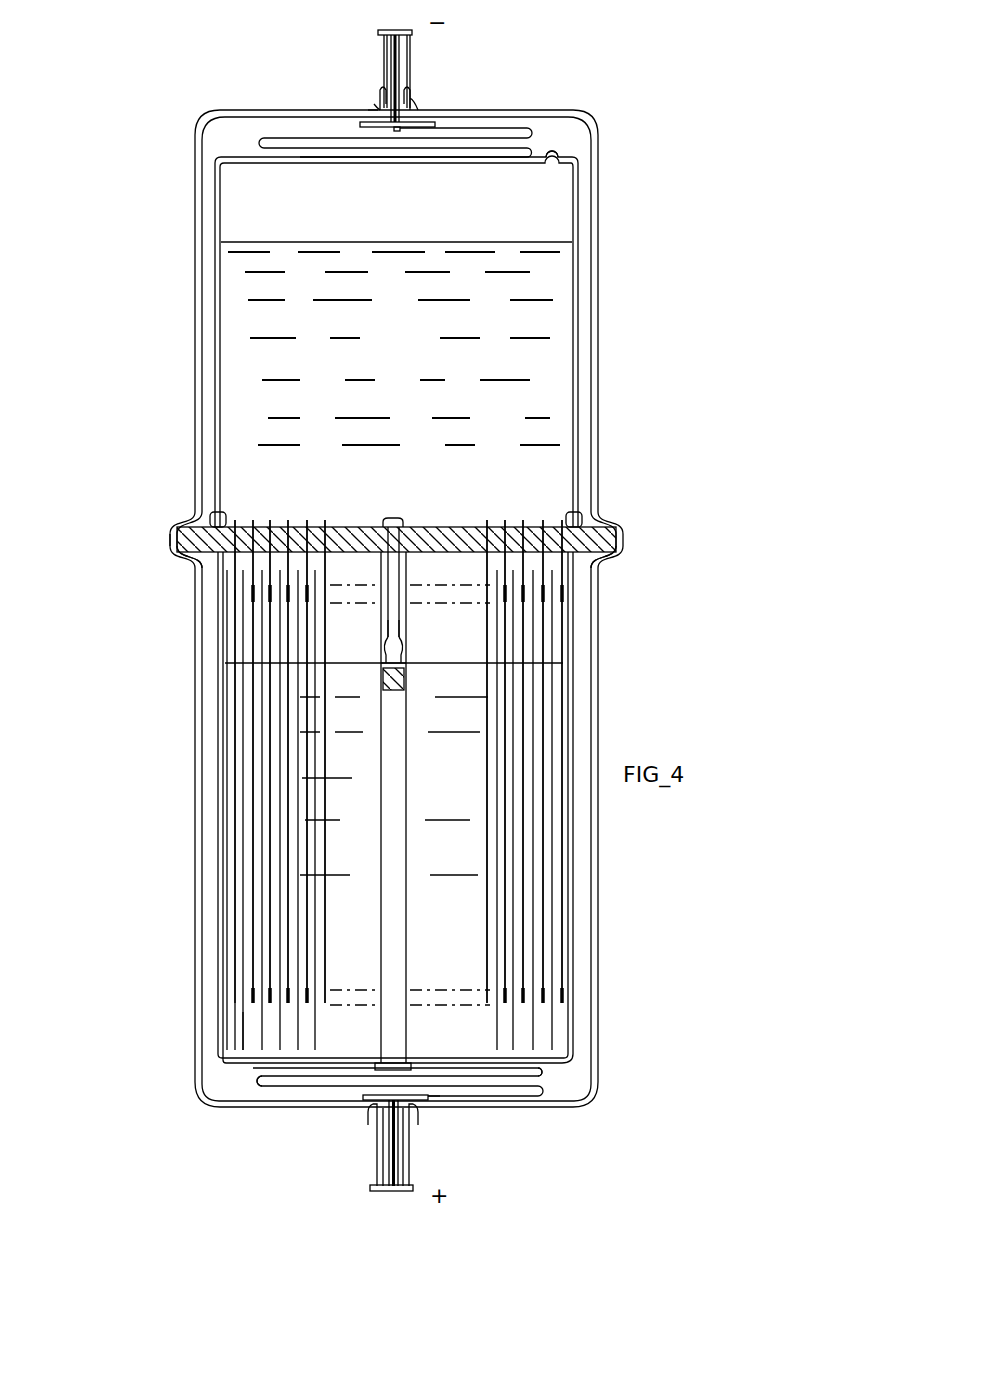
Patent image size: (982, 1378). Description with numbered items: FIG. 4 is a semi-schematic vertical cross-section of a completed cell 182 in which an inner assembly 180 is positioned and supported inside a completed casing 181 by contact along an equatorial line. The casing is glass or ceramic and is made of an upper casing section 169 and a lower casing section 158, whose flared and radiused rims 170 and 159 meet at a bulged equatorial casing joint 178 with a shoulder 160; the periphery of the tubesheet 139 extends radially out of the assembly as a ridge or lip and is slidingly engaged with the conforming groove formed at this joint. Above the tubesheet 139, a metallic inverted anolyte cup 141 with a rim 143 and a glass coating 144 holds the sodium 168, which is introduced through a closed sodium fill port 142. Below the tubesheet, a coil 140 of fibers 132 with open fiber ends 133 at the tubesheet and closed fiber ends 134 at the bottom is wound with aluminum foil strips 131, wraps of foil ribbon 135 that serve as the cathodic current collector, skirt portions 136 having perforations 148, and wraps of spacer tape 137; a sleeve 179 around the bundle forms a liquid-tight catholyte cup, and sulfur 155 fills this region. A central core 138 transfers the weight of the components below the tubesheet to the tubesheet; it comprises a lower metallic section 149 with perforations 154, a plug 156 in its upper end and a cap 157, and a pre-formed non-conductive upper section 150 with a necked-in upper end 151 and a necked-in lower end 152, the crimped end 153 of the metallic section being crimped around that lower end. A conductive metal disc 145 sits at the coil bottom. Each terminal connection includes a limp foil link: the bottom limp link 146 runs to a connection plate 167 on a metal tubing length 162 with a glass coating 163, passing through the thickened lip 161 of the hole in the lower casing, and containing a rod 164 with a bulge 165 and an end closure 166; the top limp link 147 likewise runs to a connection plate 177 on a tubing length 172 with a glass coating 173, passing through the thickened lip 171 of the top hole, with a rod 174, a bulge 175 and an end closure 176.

The aluminum foil strips 131 is at (237, 590).
The fibers 132 is at (227, 566).
The open fiber ends 133 is at (270, 527).
The closed fiber ends 134 is at (252, 1006).
The wraps of foil ribbon 135 is at (262, 760).
The skirt portions 136 is at (253, 1048).
The wraps of spacer tape 137 is at (246, 1052).
The core 138 is at (415, 820).
The tubesheet 139 is at (460, 527).
The coil 140 is at (562, 1076).
The inverted anolyte cup 141 is at (578, 215).
The sodium fill port 142 is at (560, 149).
The rim of anolyte cup 143 is at (595, 515).
The glass coating 144 is at (568, 514).
The conductive metal disc 145 is at (303, 1068).
The limp link (bottom) 146 is at (263, 1086).
The limp link (top) 147 is at (510, 128).
The perforations in foil skirts 148 is at (243, 1012).
The metallic section of core 149 is at (406, 895).
The non-conductive section of core 150 is at (402, 622).
The necked-in upper end 151 is at (385, 527).
The necked-in lower end 152 is at (497, 672).
The crimped end 153 is at (384, 650).
The perforations 154 is at (380, 665).
The sulfur 155 is at (478, 780).
The plug 156 is at (396, 690).
The cap 157 is at (380, 1067).
The lower casing section 158 is at (598, 947).
The flared and radiused rim 159 is at (172, 548).
The shoulder 160 is at (188, 560).
The thickened lip 161 is at (382, 1112).
The tubing length 162 is at (378, 1178).
The glass coating 163 is at (410, 1112).
The rod 164 is at (404, 1176).
The bulge 165 is at (424, 1102).
The end closure 166 is at (390, 1192).
The connection plate 167 is at (432, 1098).
The sodium 168 is at (418, 372).
The upper casing section 169 is at (598, 314).
The flared and radiused rim 170 is at (180, 527).
The thickened lip 171 is at (374, 106).
The tubing length 172 is at (411, 62).
The glass coating 173 is at (415, 98).
The rod 174 is at (391, 50).
The bulge 175 is at (368, 110).
The end closure 176 is at (388, 31).
The connection plate 177 is at (376, 128).
The bulged equatorial casing joint 178 is at (632, 537).
The sleeve 179 is at (220, 852).
The inner assembly 180 is at (97, 589).
The completed casing 181 is at (185, 378).
The completed cell 182 is at (607, 376).